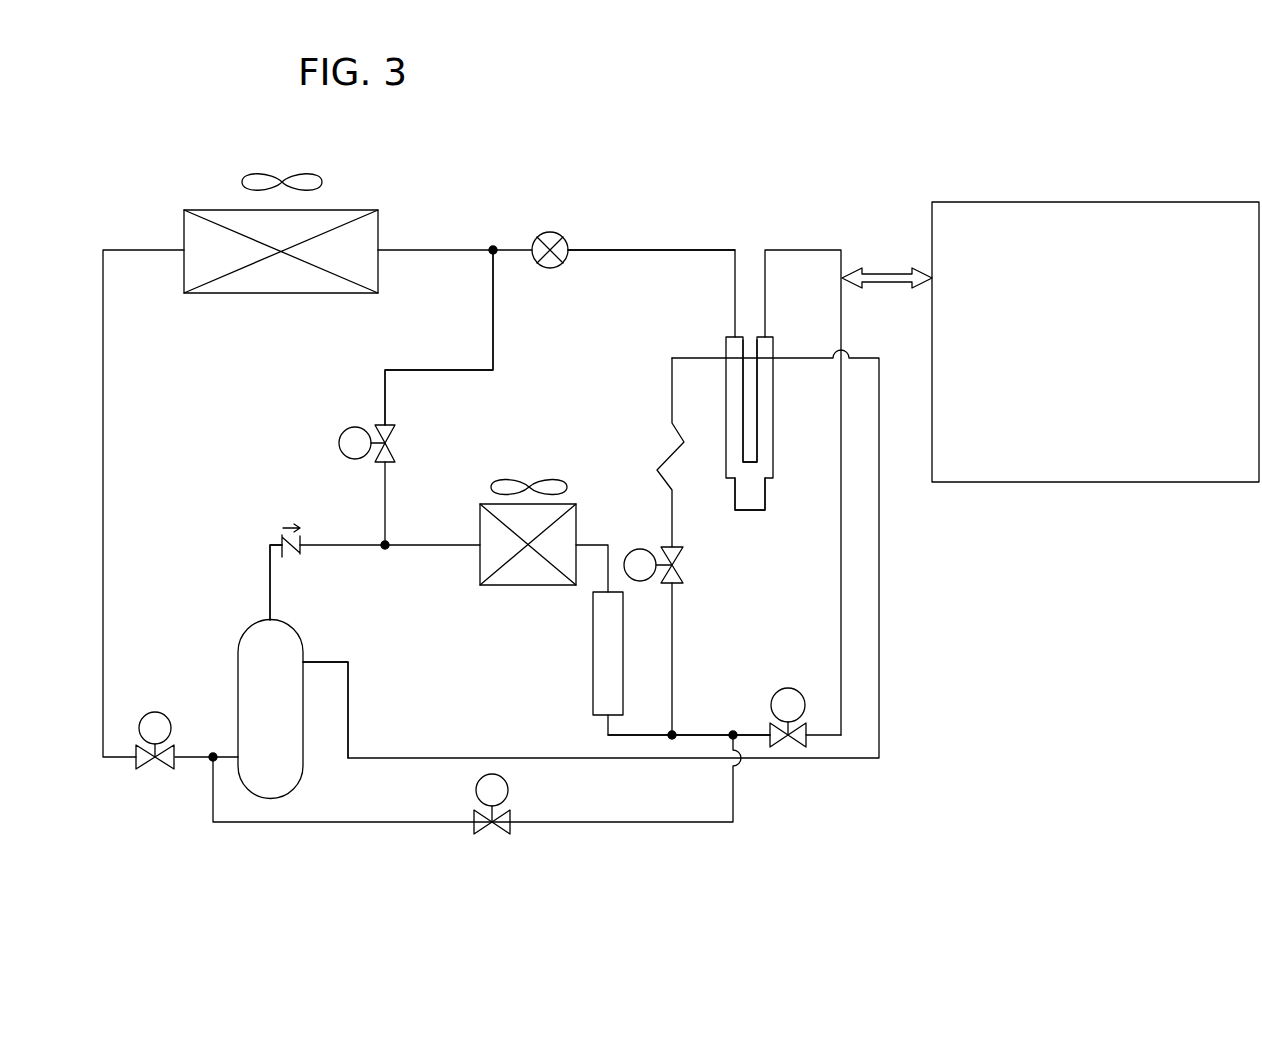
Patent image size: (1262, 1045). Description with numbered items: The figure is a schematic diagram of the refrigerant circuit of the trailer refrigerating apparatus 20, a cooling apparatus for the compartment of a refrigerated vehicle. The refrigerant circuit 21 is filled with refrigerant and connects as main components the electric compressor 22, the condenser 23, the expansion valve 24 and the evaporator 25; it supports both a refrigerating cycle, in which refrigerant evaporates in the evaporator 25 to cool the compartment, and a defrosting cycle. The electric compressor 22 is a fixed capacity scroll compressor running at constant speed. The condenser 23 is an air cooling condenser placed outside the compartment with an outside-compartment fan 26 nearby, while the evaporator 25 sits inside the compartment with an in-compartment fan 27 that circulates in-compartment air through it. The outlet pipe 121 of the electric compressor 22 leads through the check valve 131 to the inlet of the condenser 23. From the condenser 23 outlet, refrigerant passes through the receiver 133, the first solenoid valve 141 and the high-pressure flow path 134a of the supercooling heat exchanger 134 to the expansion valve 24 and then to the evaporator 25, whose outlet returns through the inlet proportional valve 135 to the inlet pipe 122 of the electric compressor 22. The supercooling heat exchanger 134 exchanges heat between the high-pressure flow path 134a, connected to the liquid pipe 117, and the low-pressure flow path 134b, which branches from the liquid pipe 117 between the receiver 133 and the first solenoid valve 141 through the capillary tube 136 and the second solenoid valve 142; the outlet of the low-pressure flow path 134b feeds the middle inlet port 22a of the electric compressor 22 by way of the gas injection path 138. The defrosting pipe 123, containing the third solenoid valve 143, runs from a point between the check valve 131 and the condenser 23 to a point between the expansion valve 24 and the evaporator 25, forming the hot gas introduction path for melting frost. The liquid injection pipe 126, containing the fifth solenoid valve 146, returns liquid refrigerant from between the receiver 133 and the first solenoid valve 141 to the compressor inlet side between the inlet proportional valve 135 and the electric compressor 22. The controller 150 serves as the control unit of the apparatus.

The trailer refrigerating apparatus 20 is at (842, 174).
The refrigerant circuit 21 is at (668, 249).
The electric compressor 22 is at (238, 658).
The middle inlet port 22a is at (306, 662).
The condenser 23 is at (520, 590).
The expansion valve 24 is at (552, 232).
The evaporator 25 is at (183, 278).
The outside-compartment fan 26 is at (542, 480).
The in-compartment fan 27 is at (293, 177).
The liquid pipe 117 is at (697, 732).
The outlet pipe 121 is at (269, 561).
The inlet pipe 122 is at (124, 750).
The defrosting pipe 123 is at (442, 371).
The liquid injection pipe 126 is at (595, 823).
The check valve 131 is at (305, 550).
The receiver 133 is at (593, 680).
The supercooling heat exchanger 134 is at (724, 347).
The high-pressure flow path 134a is at (765, 412).
The low-pressure flow path 134b is at (772, 472).
The inlet proportional valve 135 is at (157, 711).
The capillary tube 136 is at (665, 440).
The gas injection path 138 is at (884, 640).
The first solenoid valve 141 is at (787, 688).
The second solenoid valve 142 is at (640, 549).
The third solenoid valve 143 is at (395, 450).
The fifth solenoid valve 146 is at (509, 790).
The controller 150 is at (1205, 202).